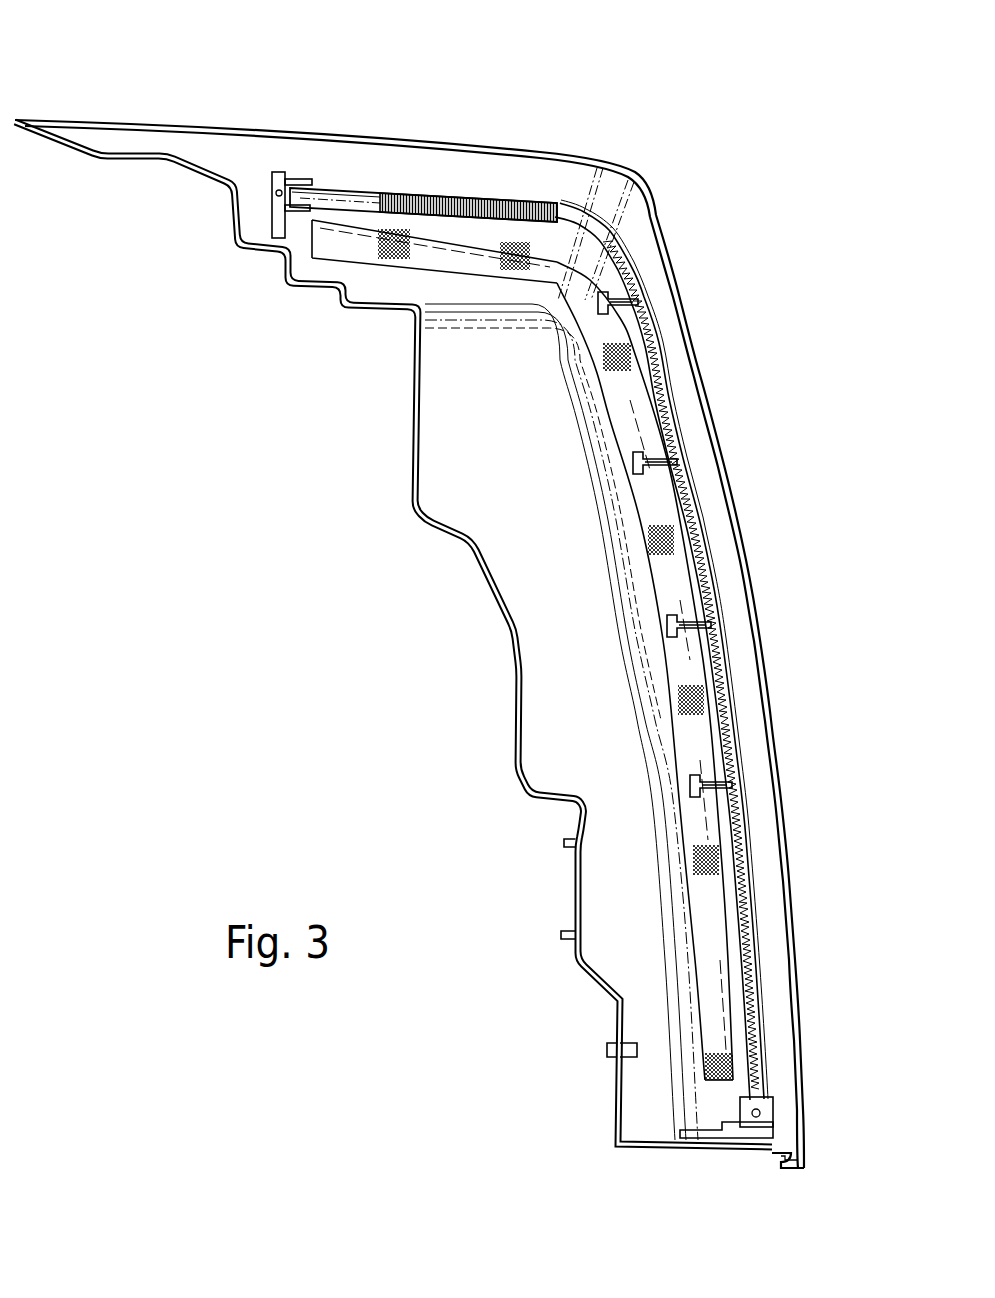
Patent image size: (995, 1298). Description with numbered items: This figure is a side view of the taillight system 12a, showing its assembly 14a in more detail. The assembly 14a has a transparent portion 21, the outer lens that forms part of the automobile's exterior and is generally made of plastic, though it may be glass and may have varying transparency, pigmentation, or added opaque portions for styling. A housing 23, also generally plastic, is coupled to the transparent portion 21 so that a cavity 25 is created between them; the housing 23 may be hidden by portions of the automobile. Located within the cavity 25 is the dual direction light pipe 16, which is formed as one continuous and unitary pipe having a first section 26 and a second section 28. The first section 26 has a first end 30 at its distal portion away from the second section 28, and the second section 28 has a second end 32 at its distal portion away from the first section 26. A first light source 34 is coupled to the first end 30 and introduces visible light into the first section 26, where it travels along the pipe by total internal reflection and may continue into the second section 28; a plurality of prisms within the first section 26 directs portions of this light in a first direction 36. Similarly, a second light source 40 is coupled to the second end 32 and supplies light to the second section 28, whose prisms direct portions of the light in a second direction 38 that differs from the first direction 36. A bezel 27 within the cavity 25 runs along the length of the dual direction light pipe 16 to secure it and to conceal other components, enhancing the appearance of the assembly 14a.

The assembly 14a is at (170, 84).
The taillight system 12a is at (735, 325).
The transparent portion 21 is at (748, 550).
The housing 23 is at (490, 590).
The second direction 38 is at (377, 233).
The cavity 25 is at (507, 404).
The second end 32 is at (520, 590).
The second section 28 is at (470, 190).
The first section 26 is at (727, 623).
The dual direction light pipe 16 is at (738, 717).
The bezel 27 is at (603, 272).
The second light source 40 is at (270, 197).
The first end 30 is at (760, 1088).
The first light source 34 is at (773, 1110).
The first direction 36 is at (793, 822).